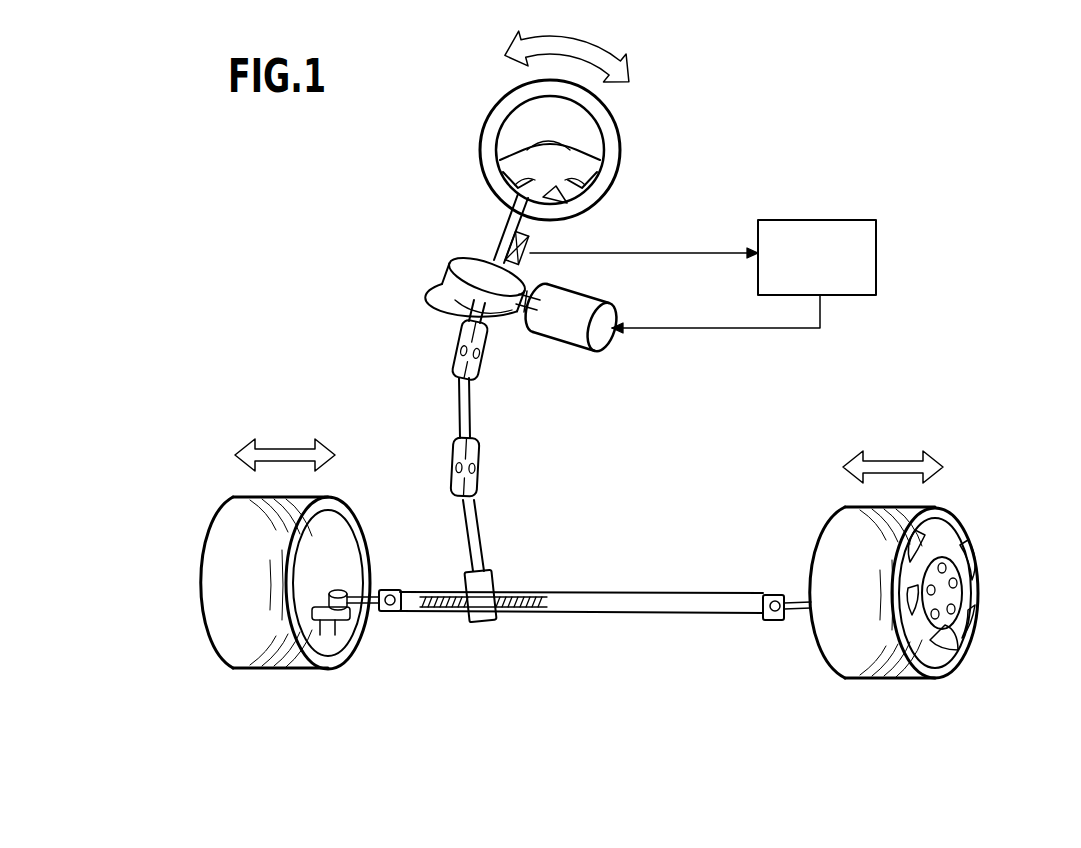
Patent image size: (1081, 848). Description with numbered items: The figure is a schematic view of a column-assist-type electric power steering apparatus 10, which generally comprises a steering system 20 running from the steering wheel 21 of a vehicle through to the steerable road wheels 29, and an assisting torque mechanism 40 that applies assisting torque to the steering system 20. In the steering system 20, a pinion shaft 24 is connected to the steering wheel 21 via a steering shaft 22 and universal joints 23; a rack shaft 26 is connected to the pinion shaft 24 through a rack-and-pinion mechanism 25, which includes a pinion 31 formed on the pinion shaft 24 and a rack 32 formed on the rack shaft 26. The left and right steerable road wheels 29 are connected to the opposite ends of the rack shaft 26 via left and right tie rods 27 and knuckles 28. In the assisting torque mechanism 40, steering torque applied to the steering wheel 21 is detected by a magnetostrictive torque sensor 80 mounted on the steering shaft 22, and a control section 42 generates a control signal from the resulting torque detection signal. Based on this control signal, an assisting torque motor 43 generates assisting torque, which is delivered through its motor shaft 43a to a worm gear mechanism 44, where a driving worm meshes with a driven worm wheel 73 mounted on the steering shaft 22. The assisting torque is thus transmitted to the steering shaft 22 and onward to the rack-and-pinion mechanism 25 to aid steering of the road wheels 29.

The column-assist-type electric power steering apparatus 10 is at (817, 77).
The steering system 20 is at (652, 148).
The steering wheel 21 is at (497, 105).
The steering shaft 22 is at (500, 228).
The universal joint 23 is at (455, 337).
The pinion shaft 24 is at (483, 540).
The rack-and-pinion mechanism 25 is at (540, 713).
The rack shaft 26 is at (660, 614).
The tie rod 27 is at (378, 613).
The knuckle 28 is at (340, 616).
The steerable road wheel 29 is at (205, 578).
The pinion 31 is at (498, 616).
The rack 32 is at (455, 612).
The assisting torque mechanism 40 is at (653, 365).
The control section 42 is at (818, 220).
The assisting torque motor 43 is at (558, 345).
The motor shaft 43a is at (528, 318).
The worm gear mechanism 44 is at (445, 268).
The worm wheel 73 is at (450, 280).
The magnetostrictive torque sensor 80 is at (530, 240).